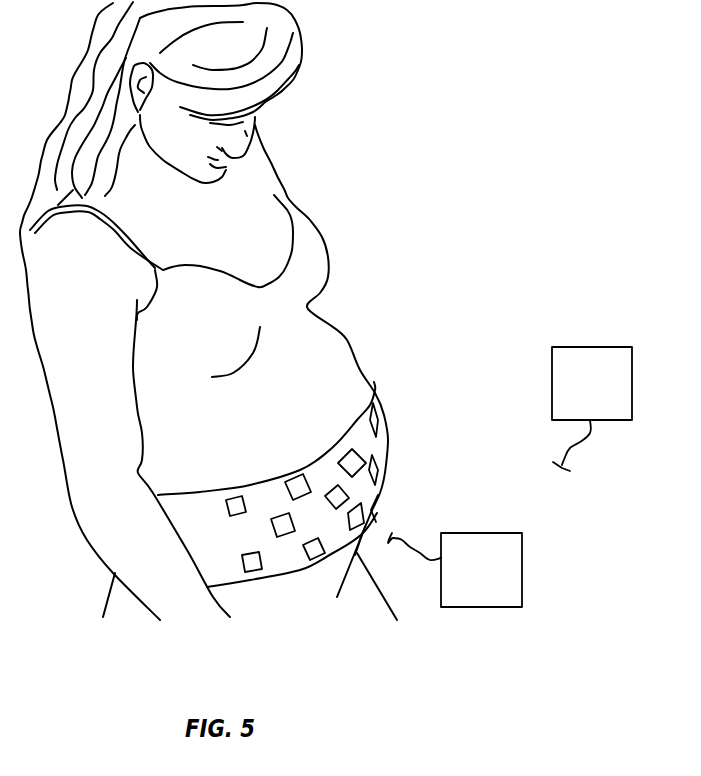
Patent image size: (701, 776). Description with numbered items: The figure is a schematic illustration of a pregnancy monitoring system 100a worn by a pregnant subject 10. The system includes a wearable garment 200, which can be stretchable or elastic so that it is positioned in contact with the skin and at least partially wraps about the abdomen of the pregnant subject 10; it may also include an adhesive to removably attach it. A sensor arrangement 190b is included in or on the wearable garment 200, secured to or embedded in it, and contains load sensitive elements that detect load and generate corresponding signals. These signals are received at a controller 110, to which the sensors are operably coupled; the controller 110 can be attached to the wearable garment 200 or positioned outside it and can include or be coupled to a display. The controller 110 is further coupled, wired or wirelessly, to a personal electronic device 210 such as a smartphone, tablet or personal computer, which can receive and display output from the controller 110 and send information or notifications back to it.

The pregnant subject 10 is at (310, 155).
The pregnancy monitoring system 100a is at (398, 414).
The wearable garment 200 is at (377, 398).
The sensor arrangement 190b is at (398, 476).
The controller 110 is at (465, 580).
The personal electronic device 210 is at (576, 394).